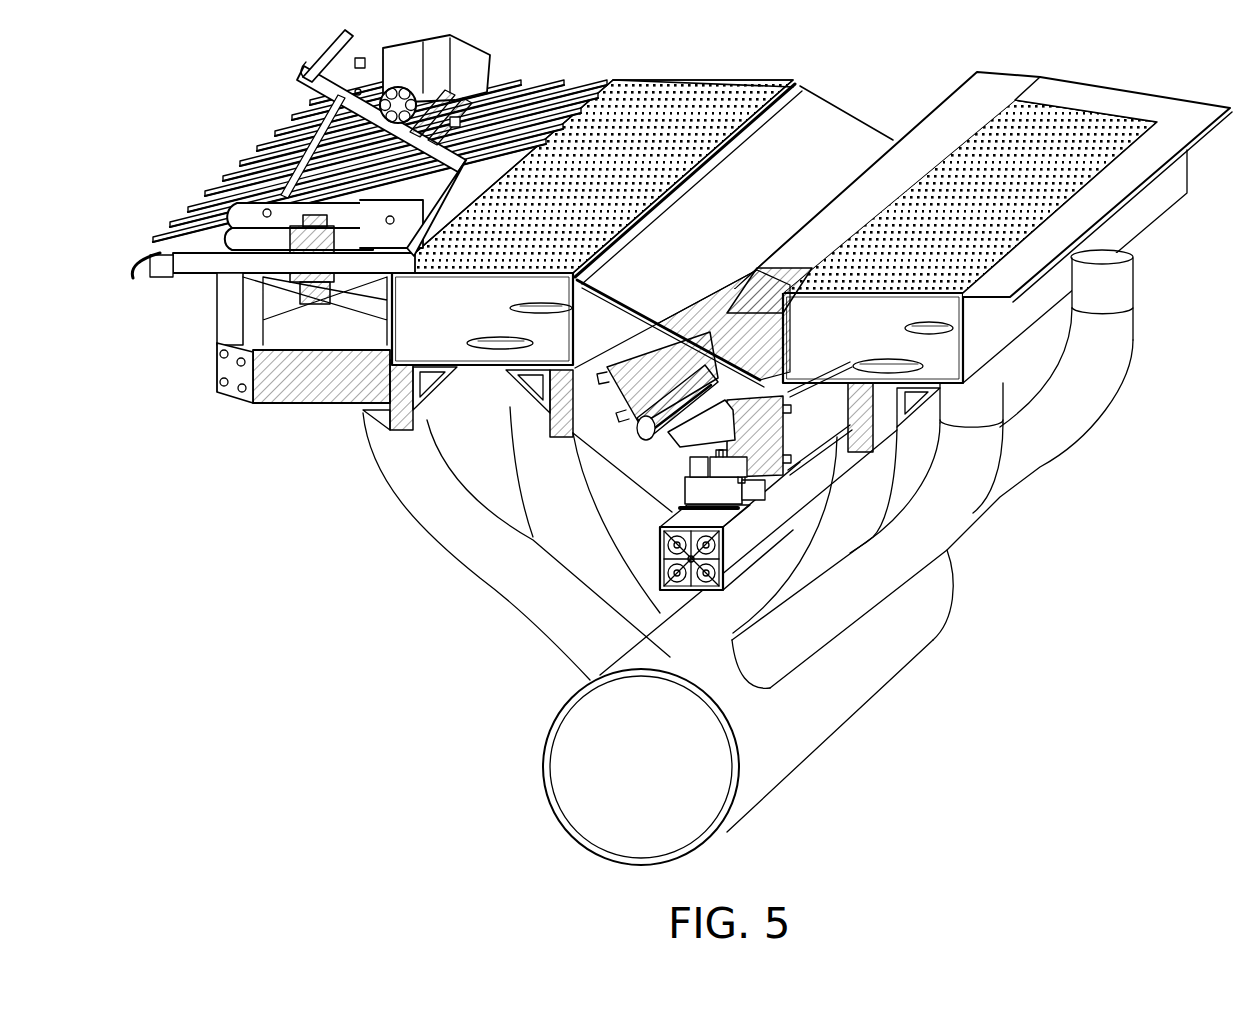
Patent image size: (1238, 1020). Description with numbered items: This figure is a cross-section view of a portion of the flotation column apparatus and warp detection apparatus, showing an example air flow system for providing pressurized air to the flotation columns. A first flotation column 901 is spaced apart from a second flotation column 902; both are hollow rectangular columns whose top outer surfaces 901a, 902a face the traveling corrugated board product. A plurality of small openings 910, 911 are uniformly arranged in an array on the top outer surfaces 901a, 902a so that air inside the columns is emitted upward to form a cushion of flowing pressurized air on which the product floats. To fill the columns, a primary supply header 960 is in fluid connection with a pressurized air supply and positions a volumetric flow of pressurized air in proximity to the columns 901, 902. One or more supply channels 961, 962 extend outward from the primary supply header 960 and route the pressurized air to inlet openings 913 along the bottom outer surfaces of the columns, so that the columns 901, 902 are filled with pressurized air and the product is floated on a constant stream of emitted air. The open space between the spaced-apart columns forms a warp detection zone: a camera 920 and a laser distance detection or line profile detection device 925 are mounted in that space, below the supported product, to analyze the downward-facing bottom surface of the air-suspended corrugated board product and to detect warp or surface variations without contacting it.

The first flotation column 901 is at (932, 350).
The top outer surface of first flotation column 901a is at (860, 294).
The second flotation column 902 is at (480, 313).
The top outer surface of second flotation column 902a is at (516, 253).
The openings 910 is at (1133, 127).
The openings 911 is at (677, 104).
The openings 913 is at (494, 347).
The camera 920 is at (680, 377).
The laser distance detection or line profile detection device 925 is at (768, 448).
The primary supply header 960 is at (808, 738).
The supply channel 961 is at (947, 550).
The supply channel 962 is at (507, 588).